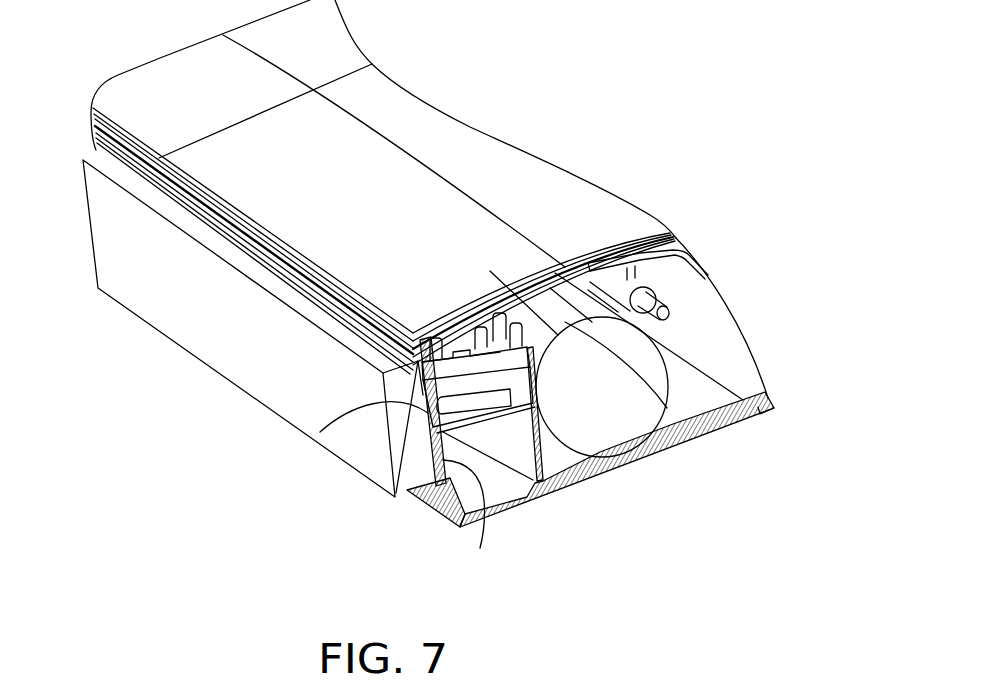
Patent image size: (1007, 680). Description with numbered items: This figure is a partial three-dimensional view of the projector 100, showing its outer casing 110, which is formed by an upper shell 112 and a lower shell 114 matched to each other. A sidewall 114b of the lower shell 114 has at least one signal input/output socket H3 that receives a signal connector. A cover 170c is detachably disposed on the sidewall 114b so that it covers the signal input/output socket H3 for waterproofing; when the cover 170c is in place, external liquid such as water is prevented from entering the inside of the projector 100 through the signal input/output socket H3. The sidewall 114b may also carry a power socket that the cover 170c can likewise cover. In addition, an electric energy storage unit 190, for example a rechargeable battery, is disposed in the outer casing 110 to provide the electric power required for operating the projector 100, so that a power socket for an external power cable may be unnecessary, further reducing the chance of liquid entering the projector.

The projector 100 is at (732, 54).
The outer casing 110 is at (625, 559).
The upper shell 112 is at (530, 310).
The lower shell 114 is at (530, 500).
The sidewall 114b is at (485, 490).
The cover 170c is at (220, 352).
The signal input/output socket H3 is at (442, 393).
The electric energy storage unit 190 is at (667, 318).